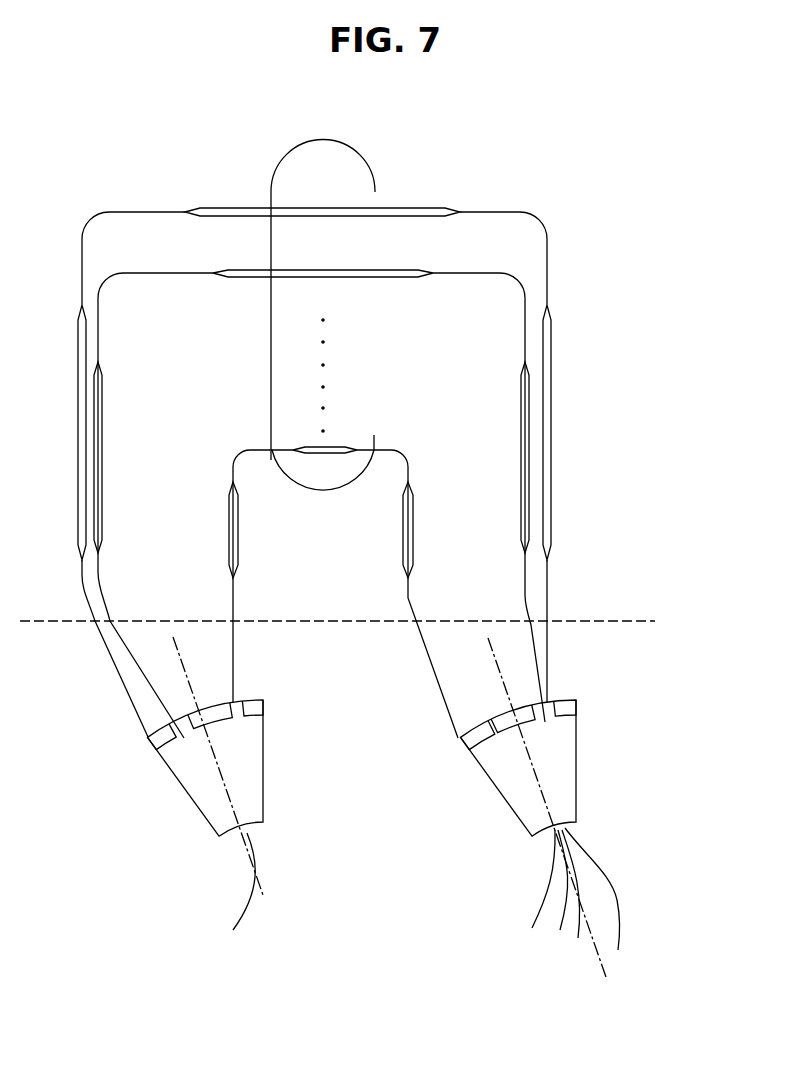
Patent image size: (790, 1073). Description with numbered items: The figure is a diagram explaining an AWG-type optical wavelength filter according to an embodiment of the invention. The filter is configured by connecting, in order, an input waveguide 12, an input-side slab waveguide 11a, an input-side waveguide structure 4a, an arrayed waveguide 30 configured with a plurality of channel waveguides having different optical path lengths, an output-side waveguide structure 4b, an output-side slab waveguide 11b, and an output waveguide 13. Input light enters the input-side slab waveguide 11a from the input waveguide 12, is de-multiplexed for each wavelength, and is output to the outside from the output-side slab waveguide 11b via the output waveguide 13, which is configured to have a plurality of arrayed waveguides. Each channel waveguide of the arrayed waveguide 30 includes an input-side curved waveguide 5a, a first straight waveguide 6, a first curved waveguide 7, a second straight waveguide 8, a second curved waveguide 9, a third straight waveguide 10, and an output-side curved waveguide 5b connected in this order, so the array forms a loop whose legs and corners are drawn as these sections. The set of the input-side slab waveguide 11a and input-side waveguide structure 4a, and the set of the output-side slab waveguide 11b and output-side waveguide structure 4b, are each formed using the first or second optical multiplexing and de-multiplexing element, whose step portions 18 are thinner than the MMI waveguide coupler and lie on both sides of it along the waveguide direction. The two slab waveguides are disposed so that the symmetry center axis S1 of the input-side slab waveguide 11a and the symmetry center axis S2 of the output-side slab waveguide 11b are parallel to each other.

The arrayed waveguide 30 is at (320, 138).
The second straight waveguide 8 is at (411, 208).
The first curved waveguide 7 is at (90, 218).
The second curved waveguide 9 is at (540, 220).
The first straight waveguide 6 is at (78, 432).
The third straight waveguide 10 is at (553, 434).
The input-side curved waveguide 5a is at (82, 592).
The output-side curved waveguide 5b is at (551, 588).
The input-side waveguide structure 4a is at (100, 622).
The output-side waveguide structure 4b is at (552, 625).
The step portion 18 is at (150, 745).
The input-side slab waveguide 11a is at (196, 797).
The output-side slab waveguide 11b is at (568, 770).
The input waveguide 12 is at (243, 898).
The output waveguide 13 is at (617, 905).
The symmetry center axis S1 is at (258, 872).
The symmetry center axis S2 is at (600, 958).